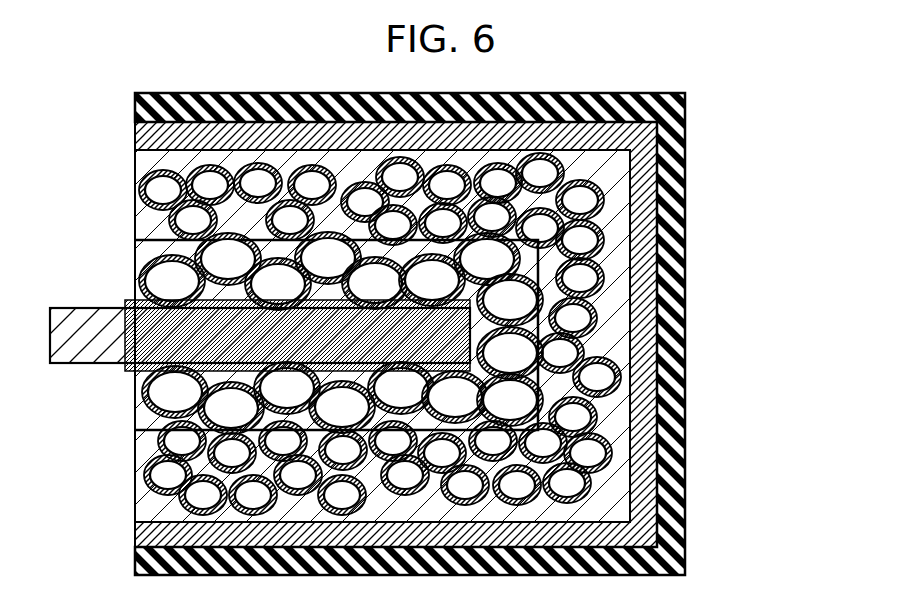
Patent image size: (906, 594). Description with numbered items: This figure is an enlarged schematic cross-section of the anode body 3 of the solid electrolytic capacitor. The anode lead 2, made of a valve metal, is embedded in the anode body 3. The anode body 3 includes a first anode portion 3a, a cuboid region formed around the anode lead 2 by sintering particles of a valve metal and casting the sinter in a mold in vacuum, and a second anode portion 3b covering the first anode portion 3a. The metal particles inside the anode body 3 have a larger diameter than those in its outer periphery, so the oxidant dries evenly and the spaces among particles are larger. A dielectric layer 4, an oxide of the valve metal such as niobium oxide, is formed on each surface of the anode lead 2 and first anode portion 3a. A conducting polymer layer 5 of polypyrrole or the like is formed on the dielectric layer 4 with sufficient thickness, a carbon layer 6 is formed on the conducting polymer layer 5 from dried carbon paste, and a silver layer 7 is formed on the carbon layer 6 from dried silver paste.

The silver layer 7 is at (135, 108).
The carbon layer 6 is at (135, 136).
The conducting polymer layer 5 is at (605, 165).
The dielectric layer 4 is at (603, 273).
The anode body 3 is at (466, 334).
The first anode portion 3a is at (513, 402).
The second anode portion 3b is at (590, 457).
The anode lead 2 is at (95, 327).